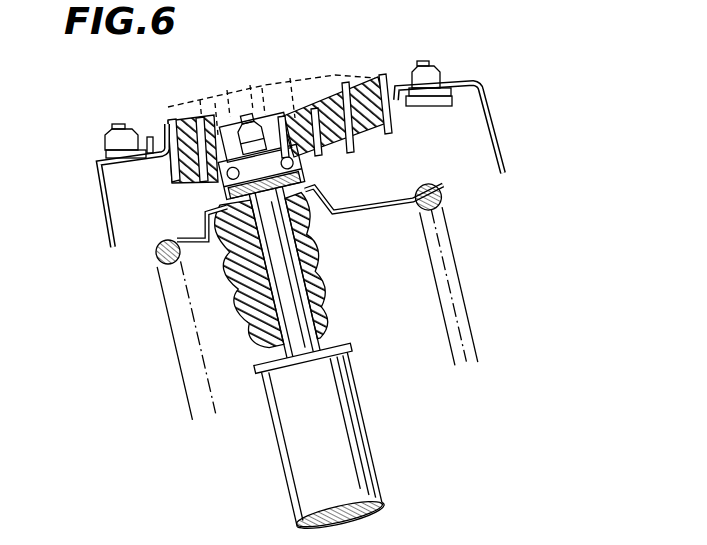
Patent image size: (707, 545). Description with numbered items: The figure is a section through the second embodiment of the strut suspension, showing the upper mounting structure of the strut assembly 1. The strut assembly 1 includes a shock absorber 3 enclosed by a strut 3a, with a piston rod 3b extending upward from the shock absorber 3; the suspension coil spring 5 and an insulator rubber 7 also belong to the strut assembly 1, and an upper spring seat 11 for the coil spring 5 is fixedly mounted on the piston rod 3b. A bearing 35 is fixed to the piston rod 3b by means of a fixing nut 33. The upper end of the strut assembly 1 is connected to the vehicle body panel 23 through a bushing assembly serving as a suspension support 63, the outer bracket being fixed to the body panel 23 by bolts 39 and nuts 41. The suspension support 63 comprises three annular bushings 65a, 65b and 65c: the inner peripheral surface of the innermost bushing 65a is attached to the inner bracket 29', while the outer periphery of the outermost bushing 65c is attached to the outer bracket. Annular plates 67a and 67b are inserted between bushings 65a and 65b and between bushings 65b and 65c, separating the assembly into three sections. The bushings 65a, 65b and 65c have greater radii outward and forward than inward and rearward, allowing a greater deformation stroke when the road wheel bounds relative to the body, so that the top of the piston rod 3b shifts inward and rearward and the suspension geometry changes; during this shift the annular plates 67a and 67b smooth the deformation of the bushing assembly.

The strut assembly 1 is at (495, 266).
The shock absorber 3 is at (363, 404).
The strut 3a is at (360, 489).
The piston rod 3b is at (304, 338).
The suspension coil spring 5 is at (468, 313).
The insulator rubber 7 is at (326, 300).
The upper spring seat 11 is at (382, 214).
The vehicle body panel 23 is at (500, 140).
The inner bracket 29' is at (182, 225).
The fixing nut 33 is at (252, 140).
The bearing 35 is at (283, 178).
The bolts 39 is at (420, 106).
The nuts 41 is at (433, 76).
The suspension support 63 is at (377, 78).
The innermost bushing 65a is at (291, 115).
The bushing 65b is at (313, 112).
The outermost bushing 65c is at (402, 120).
The annular plate 67a is at (355, 124).
The annular plate 67b is at (351, 76).